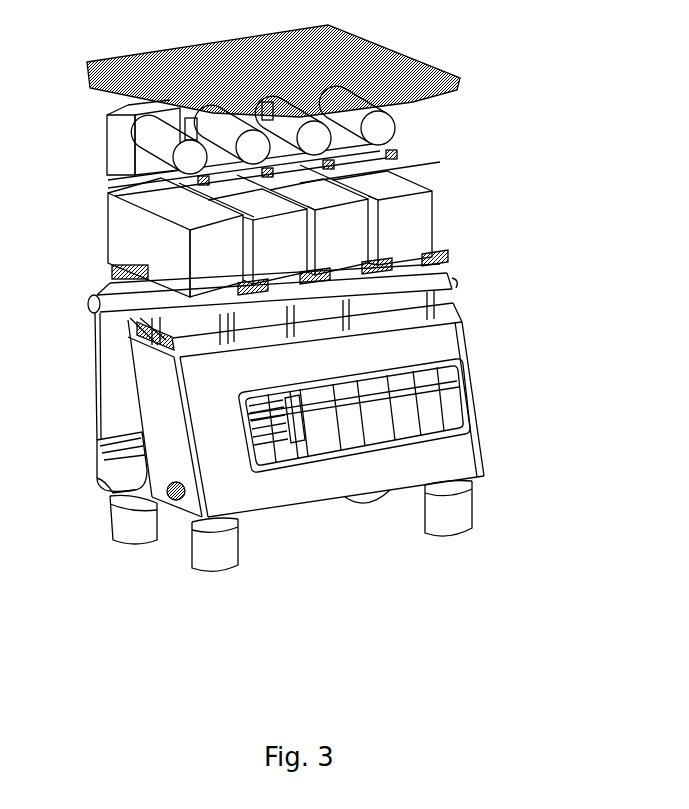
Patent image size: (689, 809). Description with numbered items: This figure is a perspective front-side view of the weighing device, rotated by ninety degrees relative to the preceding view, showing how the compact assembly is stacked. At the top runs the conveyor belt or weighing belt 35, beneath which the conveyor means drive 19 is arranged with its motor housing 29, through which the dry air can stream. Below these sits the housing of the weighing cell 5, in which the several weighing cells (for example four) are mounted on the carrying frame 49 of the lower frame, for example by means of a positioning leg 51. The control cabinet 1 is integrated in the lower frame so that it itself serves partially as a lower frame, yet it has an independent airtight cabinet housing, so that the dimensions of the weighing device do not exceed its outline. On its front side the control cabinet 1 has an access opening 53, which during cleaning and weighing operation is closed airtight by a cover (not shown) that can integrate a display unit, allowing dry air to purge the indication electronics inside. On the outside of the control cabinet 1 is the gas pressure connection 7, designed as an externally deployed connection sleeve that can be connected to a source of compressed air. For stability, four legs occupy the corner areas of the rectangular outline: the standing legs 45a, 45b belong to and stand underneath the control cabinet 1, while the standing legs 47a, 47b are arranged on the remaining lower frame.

The control cabinet 1 is at (305, 506).
The housing of the weighing cell 5 is at (407, 180).
The gas pressure connection of the control cabinet 7 is at (165, 496).
The conveyor means drive 19 is at (403, 152).
The motor housing 29 is at (393, 118).
The conveyor belt or weighing belt 35 is at (380, 40).
The standing leg 45a is at (192, 540).
The standing leg 45b is at (463, 493).
The standing leg 47a is at (110, 540).
The standing leg 47b is at (376, 506).
The carrying frame 49 is at (448, 272).
The positioning leg 51 is at (440, 266).
The access opening of the control cabinet 53 is at (472, 389).